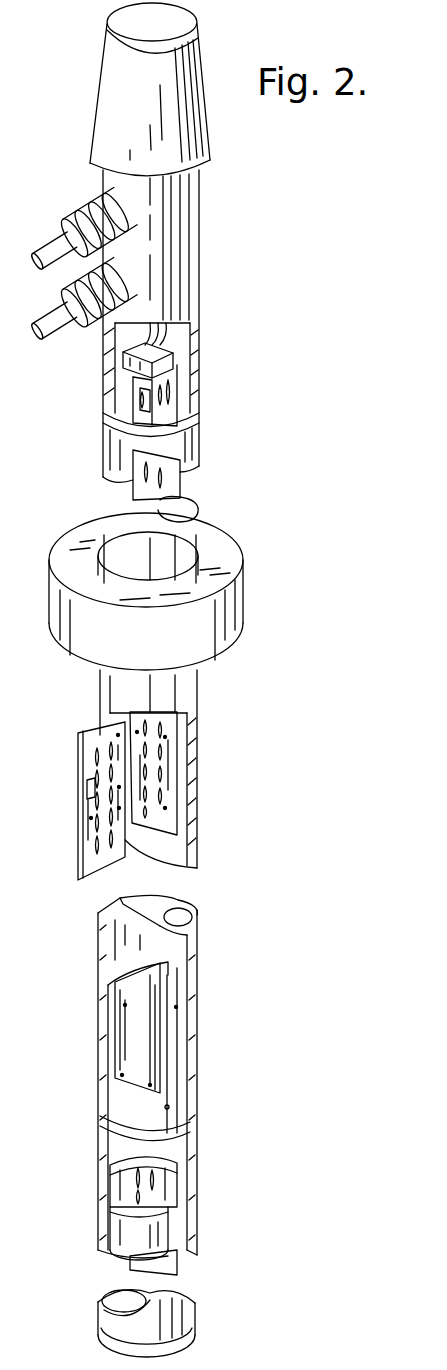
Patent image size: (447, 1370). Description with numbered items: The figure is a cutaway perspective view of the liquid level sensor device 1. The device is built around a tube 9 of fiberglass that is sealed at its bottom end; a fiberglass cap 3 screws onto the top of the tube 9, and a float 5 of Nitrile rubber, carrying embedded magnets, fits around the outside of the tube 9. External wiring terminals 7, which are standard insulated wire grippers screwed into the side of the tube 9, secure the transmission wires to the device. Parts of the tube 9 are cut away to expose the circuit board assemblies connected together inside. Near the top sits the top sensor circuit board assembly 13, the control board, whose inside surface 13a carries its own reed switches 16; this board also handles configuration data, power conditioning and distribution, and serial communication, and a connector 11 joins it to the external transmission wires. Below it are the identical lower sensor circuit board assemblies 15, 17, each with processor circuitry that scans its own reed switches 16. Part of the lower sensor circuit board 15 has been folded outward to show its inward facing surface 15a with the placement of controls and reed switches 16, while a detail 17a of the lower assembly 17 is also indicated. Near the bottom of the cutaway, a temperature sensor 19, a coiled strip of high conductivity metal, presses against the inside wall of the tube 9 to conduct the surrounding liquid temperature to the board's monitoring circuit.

The sensor probe assembly 1 is at (217, 216).
The cap 3 is at (131, 117).
The float 5 is at (147, 652).
The external wiring terminals 7 is at (68, 260).
The tube 9 is at (200, 280).
The connector 11 is at (120, 358).
The top sensor circuit board assembly 13 is at (172, 410).
The inside surface 13a is at (142, 397).
The lower sensor circuit board assembly 15 is at (82, 785).
The inward facing surface 15a is at (82, 760).
The reed switches 16 is at (180, 474).
The lower sensor circuit board assembly 17 is at (175, 1063).
The connector plate hole 17a is at (170, 1107).
The temperature sensor 19 is at (118, 1223).